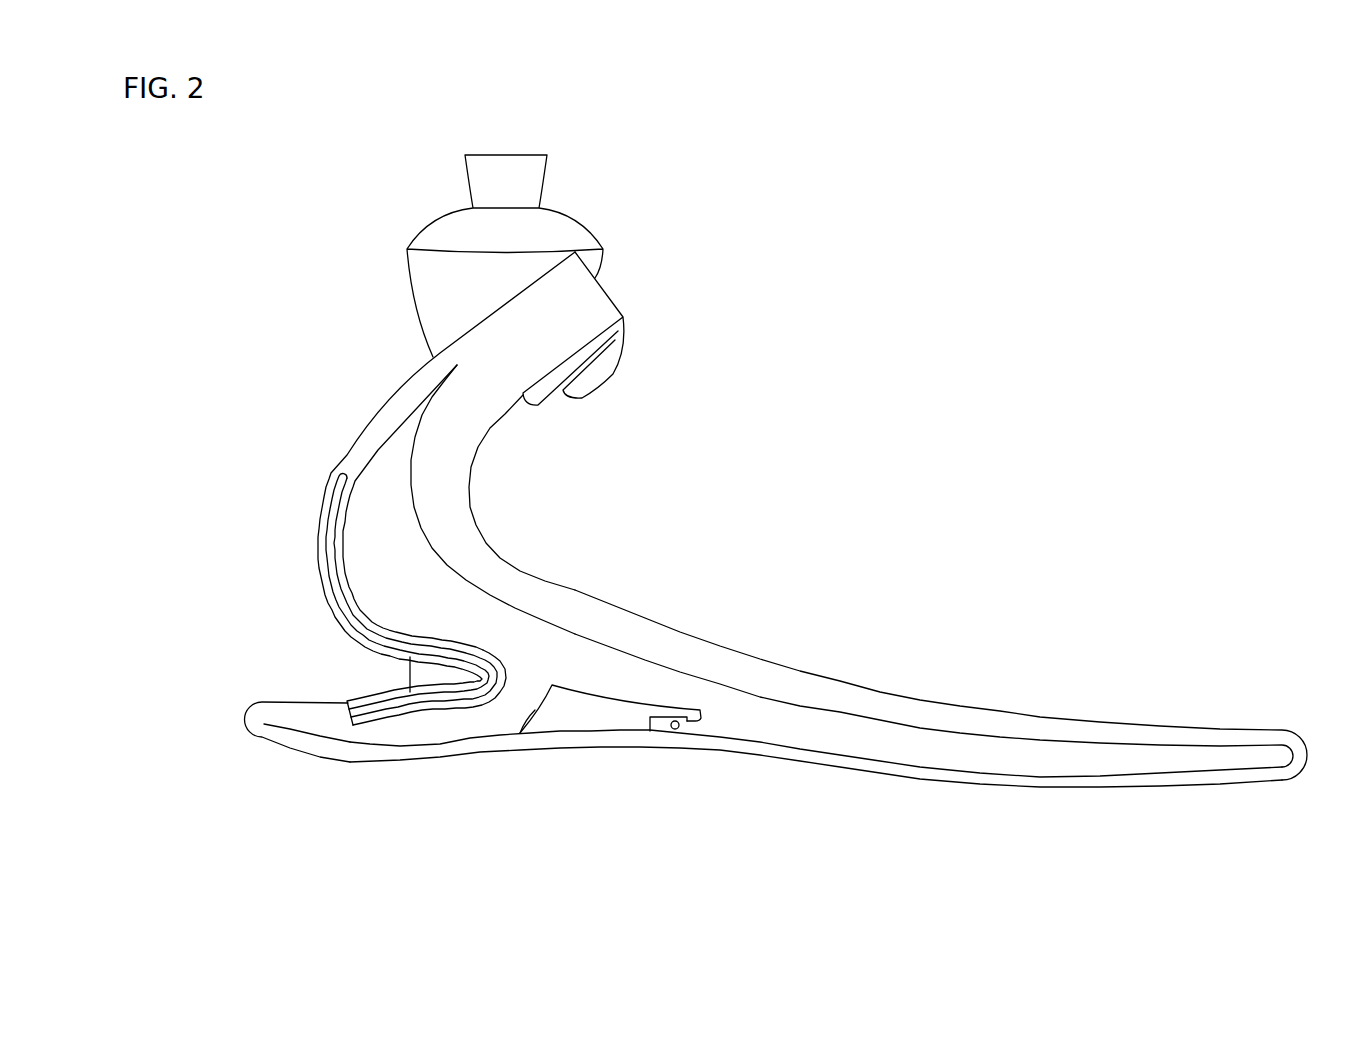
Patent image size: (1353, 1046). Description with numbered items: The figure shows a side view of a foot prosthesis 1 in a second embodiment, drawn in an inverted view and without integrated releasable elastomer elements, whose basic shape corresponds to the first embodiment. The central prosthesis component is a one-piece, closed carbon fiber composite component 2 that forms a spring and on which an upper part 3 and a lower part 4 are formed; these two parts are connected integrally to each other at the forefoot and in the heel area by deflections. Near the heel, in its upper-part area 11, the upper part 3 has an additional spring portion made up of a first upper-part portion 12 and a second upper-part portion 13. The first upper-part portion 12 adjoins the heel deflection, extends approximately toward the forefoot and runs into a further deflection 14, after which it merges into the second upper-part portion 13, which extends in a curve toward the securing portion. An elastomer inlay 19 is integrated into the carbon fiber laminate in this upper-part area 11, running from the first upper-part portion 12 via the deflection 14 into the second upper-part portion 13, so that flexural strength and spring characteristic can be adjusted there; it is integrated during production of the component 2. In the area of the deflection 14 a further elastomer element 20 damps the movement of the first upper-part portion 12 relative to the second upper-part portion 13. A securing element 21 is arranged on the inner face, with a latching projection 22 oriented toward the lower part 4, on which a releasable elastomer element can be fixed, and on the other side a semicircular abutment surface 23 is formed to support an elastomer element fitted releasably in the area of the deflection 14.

The foot prosthesis 1 is at (912, 310).
The carbon fiber composite component 2 is at (697, 577).
The upper part 3 is at (972, 707).
The lower part 4 is at (772, 757).
The upper-part area 11 is at (293, 518).
The first upper-part portion 12 is at (320, 702).
The second upper-part portion 13 is at (357, 580).
The deflection 14 is at (508, 662).
The elastomer inlay 19 is at (323, 568).
The elastomer element 20 is at (428, 670).
The securing element 21 is at (598, 711).
The latching projection 22 is at (677, 731).
The abutment surface 23 is at (535, 710).